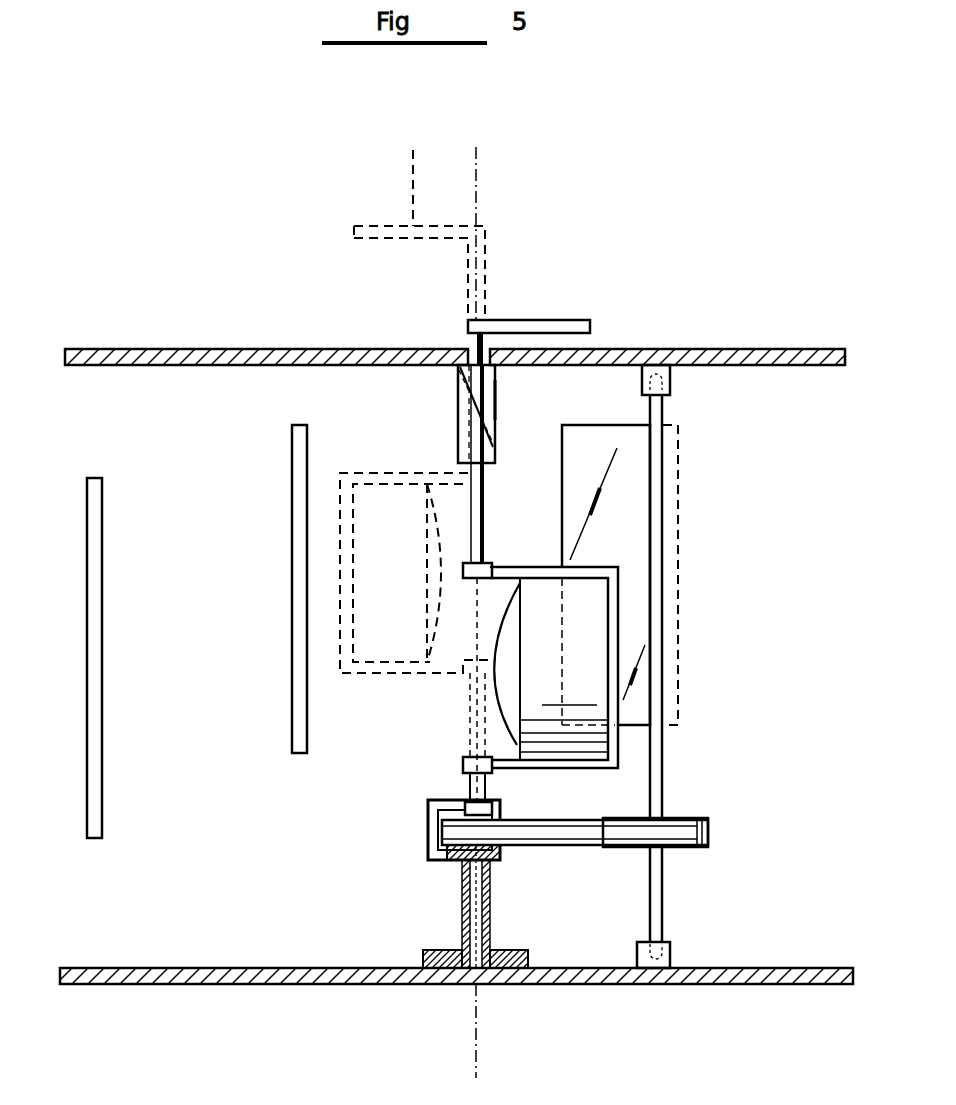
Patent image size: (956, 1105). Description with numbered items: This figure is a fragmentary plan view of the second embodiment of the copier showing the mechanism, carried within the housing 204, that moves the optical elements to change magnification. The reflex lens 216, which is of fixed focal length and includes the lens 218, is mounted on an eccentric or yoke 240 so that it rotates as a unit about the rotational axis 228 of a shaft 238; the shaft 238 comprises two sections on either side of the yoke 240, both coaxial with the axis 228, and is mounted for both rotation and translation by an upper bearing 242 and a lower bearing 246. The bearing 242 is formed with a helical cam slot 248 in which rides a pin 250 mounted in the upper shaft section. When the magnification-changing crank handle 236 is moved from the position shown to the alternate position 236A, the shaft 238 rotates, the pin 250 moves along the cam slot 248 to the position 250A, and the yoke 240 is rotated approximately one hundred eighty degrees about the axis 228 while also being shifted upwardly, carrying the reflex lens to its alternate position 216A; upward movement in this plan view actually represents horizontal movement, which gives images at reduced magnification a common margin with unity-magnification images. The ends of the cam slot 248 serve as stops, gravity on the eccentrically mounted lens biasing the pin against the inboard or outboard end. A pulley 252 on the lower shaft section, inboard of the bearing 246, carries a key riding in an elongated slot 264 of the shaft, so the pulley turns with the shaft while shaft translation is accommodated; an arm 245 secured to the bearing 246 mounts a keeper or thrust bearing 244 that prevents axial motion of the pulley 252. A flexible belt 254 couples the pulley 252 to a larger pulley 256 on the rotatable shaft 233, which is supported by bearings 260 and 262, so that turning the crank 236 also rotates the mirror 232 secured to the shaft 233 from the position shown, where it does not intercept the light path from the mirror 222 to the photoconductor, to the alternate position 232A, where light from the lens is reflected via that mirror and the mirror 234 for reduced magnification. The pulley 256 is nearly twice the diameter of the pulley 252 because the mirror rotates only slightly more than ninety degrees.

The housing 204 is at (778, 350).
The reflex lens 216 is at (597, 755).
The reflex lens alternate position 216A is at (383, 473).
The lens 218 is at (506, 628).
The mirror 222 is at (90, 840).
The rotational axis 228 is at (476, 172).
The mirror 232 is at (596, 424).
The mirror alternate position 232A is at (678, 543).
The rotatable shaft 233 is at (665, 415).
The mirror 234 is at (305, 420).
The magnification-changing crank handle 236 is at (590, 320).
The crank handle alternate position 236A is at (413, 160).
The shaft 238 is at (468, 505).
The eccentric or yoke 240 is at (545, 545).
The bearing 242 is at (458, 437).
The keeper or thrust bearing 244 is at (495, 808).
The arm 245 is at (421, 835).
The bearing 246 is at (460, 880).
The helical cam slot 248 is at (497, 400).
The pin 250 is at (495, 447).
The pin alternate position 250A is at (458, 376).
The pulley 252 is at (500, 850).
The flexible belt 254 is at (590, 845).
The pulley 256 is at (708, 840).
The bearing 260 is at (672, 950).
The bearing 262 is at (672, 390).
The elongated slot 264 is at (462, 920).